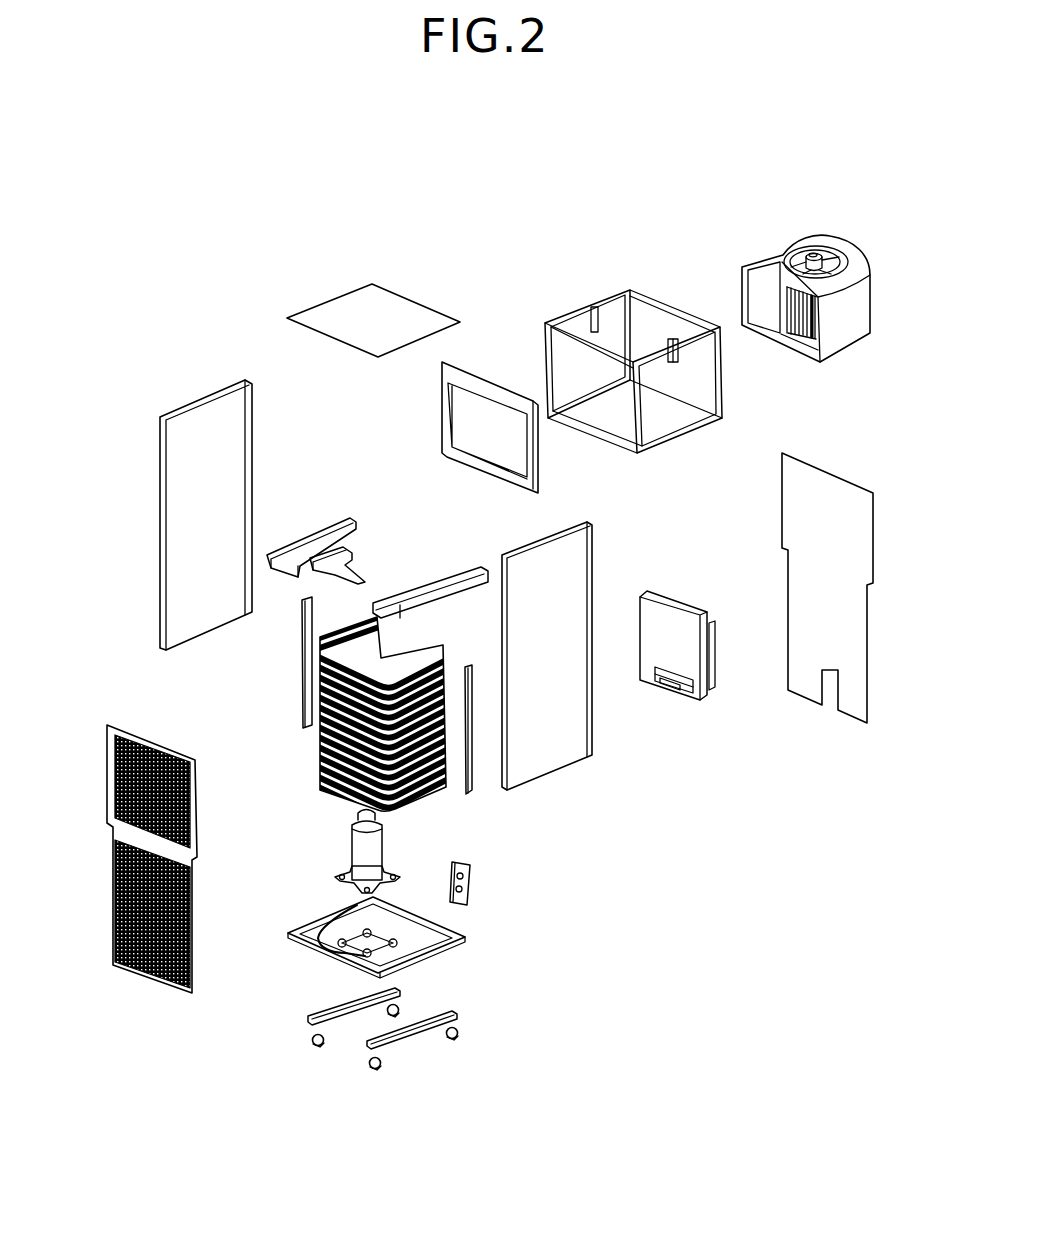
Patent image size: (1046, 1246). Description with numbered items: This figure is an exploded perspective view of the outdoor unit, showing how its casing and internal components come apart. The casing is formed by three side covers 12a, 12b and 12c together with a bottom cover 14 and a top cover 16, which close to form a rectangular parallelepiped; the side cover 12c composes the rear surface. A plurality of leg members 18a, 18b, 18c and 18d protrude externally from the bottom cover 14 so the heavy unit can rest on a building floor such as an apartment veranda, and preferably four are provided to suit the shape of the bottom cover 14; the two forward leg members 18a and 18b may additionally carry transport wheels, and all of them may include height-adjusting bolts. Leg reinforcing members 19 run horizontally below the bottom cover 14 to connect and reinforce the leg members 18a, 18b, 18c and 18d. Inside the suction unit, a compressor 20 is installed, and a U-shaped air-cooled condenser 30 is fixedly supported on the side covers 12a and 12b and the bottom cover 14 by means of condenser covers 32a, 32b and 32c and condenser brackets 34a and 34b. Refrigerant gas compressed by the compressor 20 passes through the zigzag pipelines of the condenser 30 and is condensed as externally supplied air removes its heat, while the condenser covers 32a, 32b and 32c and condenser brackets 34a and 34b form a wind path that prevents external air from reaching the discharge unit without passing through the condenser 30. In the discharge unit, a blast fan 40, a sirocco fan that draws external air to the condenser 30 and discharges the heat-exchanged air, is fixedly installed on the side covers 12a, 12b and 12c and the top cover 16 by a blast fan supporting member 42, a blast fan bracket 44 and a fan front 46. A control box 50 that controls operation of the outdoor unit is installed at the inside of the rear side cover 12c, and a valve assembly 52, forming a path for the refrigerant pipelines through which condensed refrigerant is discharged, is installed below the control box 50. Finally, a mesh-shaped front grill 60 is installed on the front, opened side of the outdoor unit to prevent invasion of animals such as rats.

The side cover 12a is at (193, 397).
The side cover 12b is at (578, 733).
The side cover 12c is at (875, 510).
The bottom cover 14 is at (292, 937).
The top cover 16 is at (358, 303).
The leg member 18a is at (319, 1050).
The leg member 18b is at (382, 1068).
The leg member 18c is at (460, 1036).
The leg member 18d is at (400, 1008).
The leg reinforcing member 19 is at (381, 1037).
The compressor 20 is at (337, 878).
The air-cooled condenser 30 is at (318, 773).
The condenser cover 32a is at (322, 530).
The condenser cover 32b is at (317, 580).
The condenser cover 32c is at (447, 590).
The condenser bracket 34a is at (303, 696).
The condenser bracket 34b is at (480, 762).
The blast fan 40 is at (858, 250).
The blast fan supporting member 42 is at (567, 313).
The blast fan bracket 44 is at (678, 362).
The fan front 46 is at (495, 380).
The control box 50 is at (680, 606).
The valve assembly 52 is at (472, 884).
The front grill 60 is at (154, 742).